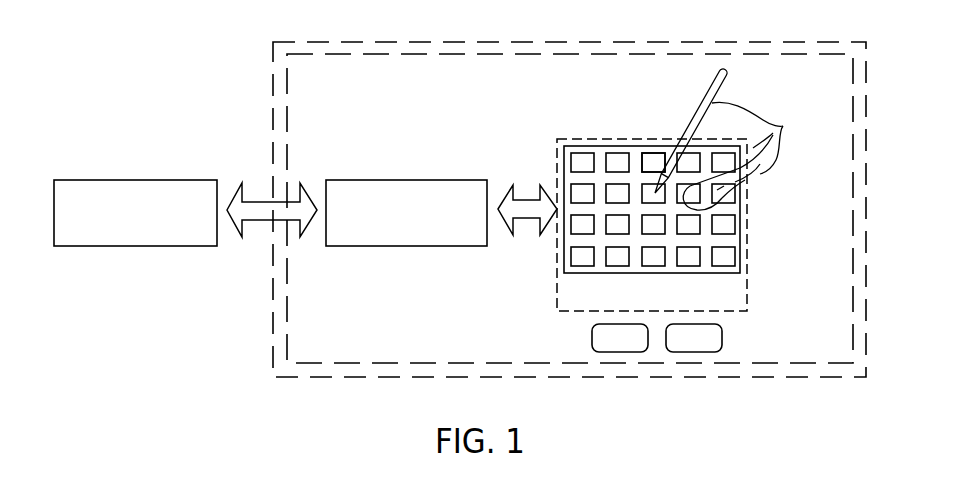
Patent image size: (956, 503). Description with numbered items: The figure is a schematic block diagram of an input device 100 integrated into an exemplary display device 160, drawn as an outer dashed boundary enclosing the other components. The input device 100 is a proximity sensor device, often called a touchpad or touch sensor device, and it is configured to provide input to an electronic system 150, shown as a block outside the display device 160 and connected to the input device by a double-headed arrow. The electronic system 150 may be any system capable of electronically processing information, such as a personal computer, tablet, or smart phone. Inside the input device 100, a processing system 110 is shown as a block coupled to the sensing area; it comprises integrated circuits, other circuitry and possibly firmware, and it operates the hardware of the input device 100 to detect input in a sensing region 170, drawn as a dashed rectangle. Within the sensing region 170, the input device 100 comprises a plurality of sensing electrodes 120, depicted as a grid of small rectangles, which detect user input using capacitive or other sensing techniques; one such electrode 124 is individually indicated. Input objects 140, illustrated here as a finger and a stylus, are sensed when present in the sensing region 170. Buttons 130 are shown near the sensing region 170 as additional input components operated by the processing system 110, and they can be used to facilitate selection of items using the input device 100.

The input device 100 is at (378, 327).
The processing system 110 is at (366, 180).
The sensing electrodes 120 is at (583, 153).
The sensor electrode 124 is at (630, 152).
The buttons 130 is at (592, 337).
The input objects 140 is at (786, 118).
The electronic system 150 is at (96, 180).
The display device 160 is at (413, 42).
The sensing region 170 is at (573, 139).